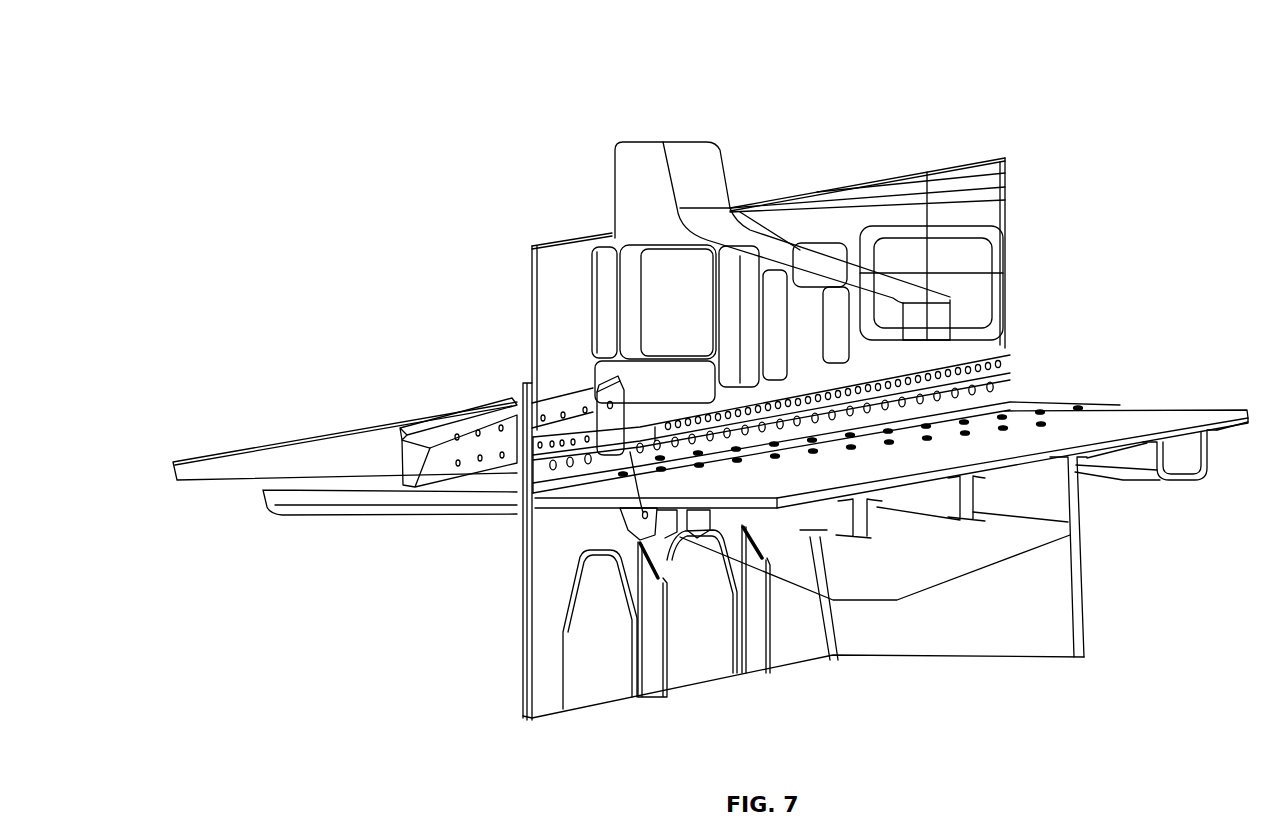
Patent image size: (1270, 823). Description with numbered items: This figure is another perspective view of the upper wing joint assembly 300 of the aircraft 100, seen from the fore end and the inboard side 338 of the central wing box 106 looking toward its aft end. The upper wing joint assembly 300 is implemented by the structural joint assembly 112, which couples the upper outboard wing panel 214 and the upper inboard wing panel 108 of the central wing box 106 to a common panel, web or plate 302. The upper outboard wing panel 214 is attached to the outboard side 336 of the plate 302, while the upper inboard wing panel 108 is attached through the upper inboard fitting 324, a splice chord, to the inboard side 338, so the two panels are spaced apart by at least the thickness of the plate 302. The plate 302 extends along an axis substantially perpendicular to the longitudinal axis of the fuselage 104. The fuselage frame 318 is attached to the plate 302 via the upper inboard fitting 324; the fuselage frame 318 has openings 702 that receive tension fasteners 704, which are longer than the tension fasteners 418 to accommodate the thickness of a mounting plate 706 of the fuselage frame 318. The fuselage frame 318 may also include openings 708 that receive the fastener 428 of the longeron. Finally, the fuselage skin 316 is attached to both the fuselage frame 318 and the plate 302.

The aircraft 100 is at (340, 78).
The structural joint assembly 112 is at (365, 273).
The upper wing joint assembly 300 is at (572, 186).
The fuselage 104 is at (700, 170).
The fastener 428 is at (622, 402).
The fuselage frame 318 is at (880, 292).
The fuselage skin 316 is at (532, 280).
The openings 708 is at (600, 405).
The mounting plate 706 is at (603, 423).
The openings 702 is at (595, 432).
The upper inboard fitting 324 is at (1010, 402).
The upper inboard wing panel 108 is at (1173, 416).
The upper outboard wing panel 214 is at (268, 455).
The plate 302 is at (520, 545).
The outboard side 336 is at (402, 667).
The central wing box 106 is at (702, 665).
The tension fasteners 704 is at (647, 452).
The tension fasteners 418 is at (693, 443).
The inboard side 338 is at (1082, 740).